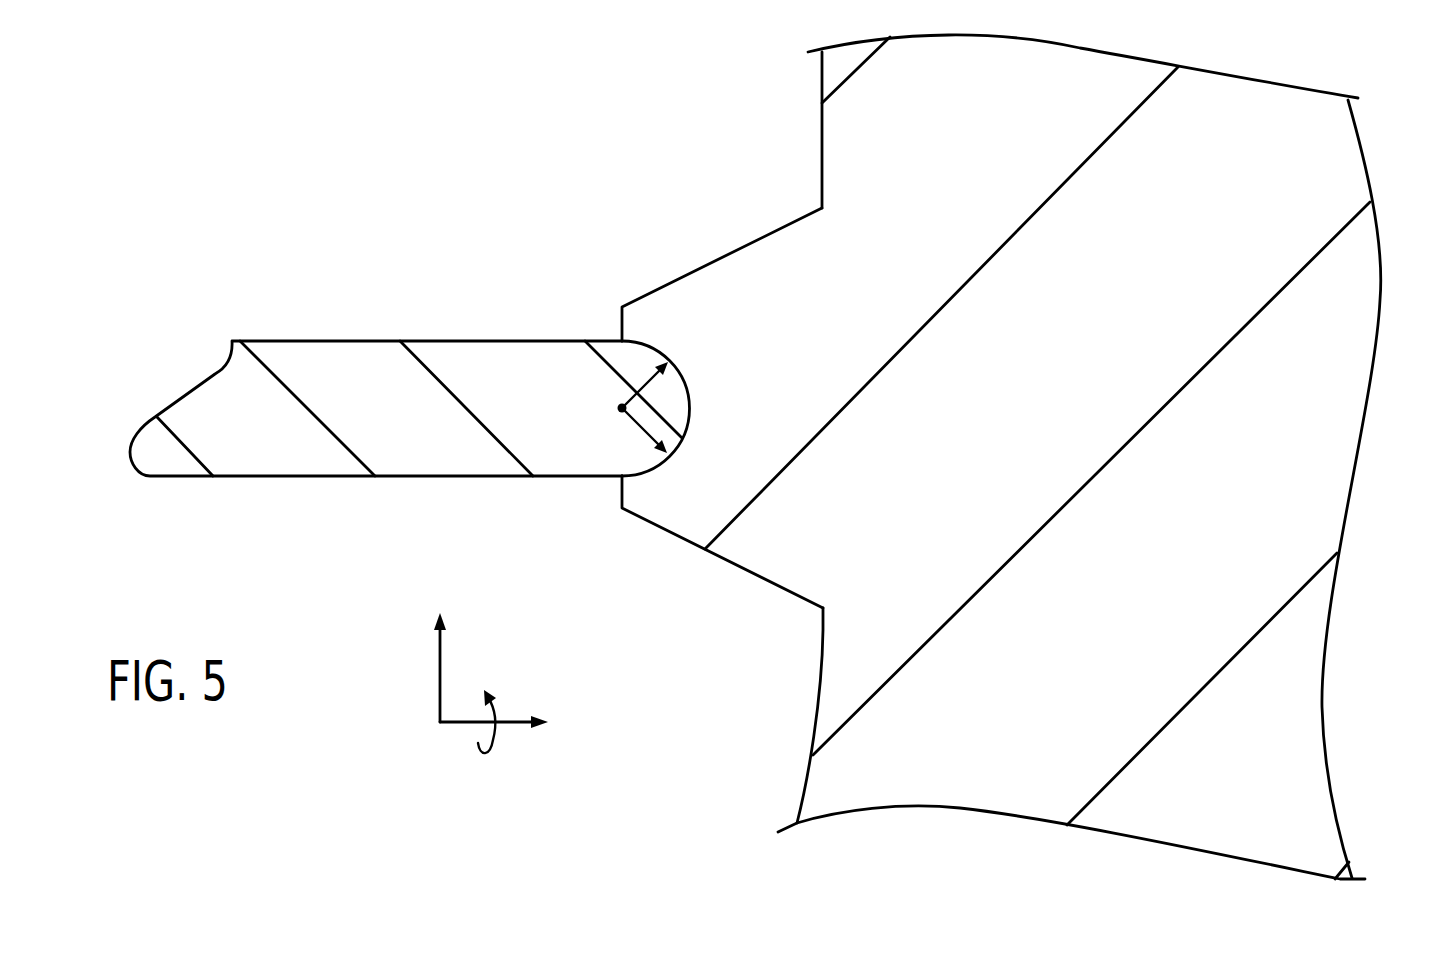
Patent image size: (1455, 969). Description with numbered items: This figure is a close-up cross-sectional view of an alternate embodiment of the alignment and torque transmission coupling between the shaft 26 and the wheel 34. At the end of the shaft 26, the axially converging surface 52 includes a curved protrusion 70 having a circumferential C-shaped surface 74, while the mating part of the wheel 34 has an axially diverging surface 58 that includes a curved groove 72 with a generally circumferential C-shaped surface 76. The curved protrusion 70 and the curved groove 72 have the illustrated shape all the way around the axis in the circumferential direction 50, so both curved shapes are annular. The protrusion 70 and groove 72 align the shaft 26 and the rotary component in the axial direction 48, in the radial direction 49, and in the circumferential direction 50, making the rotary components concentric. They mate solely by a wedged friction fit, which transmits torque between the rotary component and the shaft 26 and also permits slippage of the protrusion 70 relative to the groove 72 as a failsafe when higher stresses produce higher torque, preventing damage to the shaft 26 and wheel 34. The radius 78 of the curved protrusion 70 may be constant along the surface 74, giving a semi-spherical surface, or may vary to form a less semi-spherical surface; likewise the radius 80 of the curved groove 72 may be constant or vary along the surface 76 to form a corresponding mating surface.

The shaft 26 is at (263, 476).
The wheel 34 is at (1342, 295).
The axial direction 48 is at (512, 717).
The radial direction 49 is at (440, 652).
The circumferential direction 50 is at (494, 708).
The axially converging surface 52 is at (657, 465).
The axially diverging surface 58 is at (641, 467).
The curved protrusion 70 is at (507, 363).
The curved groove 72 is at (688, 428).
The C-shaped surface 74 is at (651, 345).
The C-shaped surface 76 is at (687, 387).
The radius 78 is at (632, 400).
The radius 80 is at (635, 423).